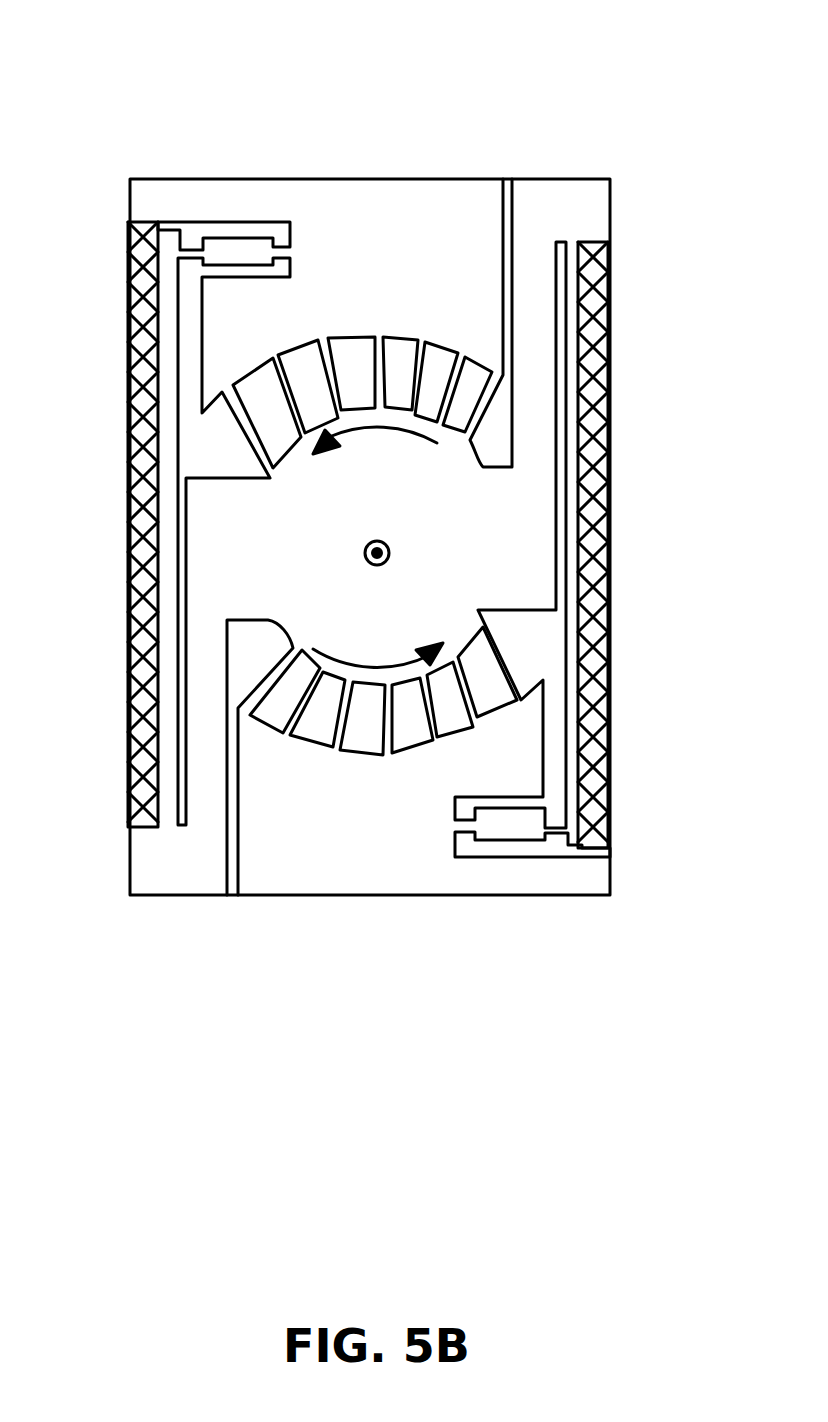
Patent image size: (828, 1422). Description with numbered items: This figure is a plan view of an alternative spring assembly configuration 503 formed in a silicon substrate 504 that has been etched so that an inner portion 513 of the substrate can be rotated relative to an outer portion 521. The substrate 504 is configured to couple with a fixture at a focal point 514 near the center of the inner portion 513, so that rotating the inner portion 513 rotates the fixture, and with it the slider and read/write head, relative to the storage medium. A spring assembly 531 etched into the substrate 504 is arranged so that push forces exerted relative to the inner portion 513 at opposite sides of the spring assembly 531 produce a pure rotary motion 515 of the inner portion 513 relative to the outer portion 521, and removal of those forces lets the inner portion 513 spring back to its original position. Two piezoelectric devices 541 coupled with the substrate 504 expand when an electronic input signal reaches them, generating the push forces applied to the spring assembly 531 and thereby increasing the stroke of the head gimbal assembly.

The alternative spring assembly configuration 503 is at (200, 34).
The silicon substrate 504 is at (224, 180).
The inner portion 513 is at (356, 547).
The focal point 514 is at (391, 540).
The pure rotary motion 515 is at (357, 438).
The outer portion 521 is at (366, 849).
The spring assembly 531 is at (210, 438).
The piezoelectric devices 541 is at (610, 286).